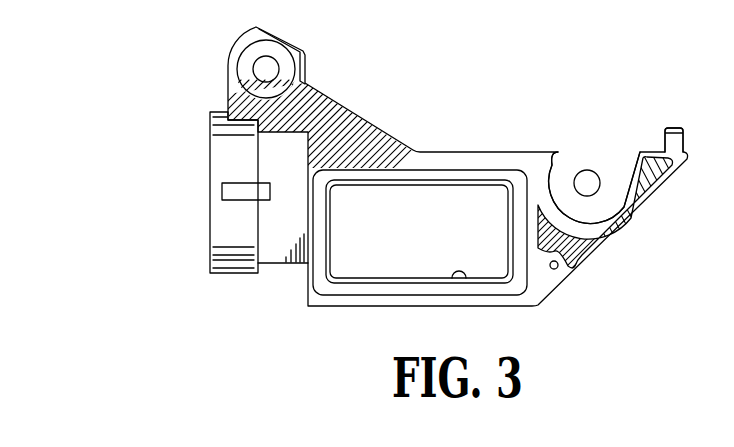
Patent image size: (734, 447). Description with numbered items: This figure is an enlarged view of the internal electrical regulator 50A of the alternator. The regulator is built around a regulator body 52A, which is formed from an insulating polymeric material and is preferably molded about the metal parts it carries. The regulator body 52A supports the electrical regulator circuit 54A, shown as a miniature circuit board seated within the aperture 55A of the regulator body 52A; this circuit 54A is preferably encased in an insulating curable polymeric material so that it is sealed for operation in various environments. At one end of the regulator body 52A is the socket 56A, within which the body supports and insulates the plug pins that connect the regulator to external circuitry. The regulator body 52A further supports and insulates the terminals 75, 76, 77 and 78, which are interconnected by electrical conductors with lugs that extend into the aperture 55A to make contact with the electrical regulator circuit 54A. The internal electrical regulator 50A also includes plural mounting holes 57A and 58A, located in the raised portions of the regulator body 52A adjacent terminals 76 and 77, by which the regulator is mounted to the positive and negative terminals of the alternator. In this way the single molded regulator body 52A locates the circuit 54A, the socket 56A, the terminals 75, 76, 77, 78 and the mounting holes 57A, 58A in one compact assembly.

The internal electrical regulator 50A is at (442, 107).
The regulator body 52A is at (575, 238).
The electrical regulator circuit 54A is at (370, 280).
The aperture 55A is at (450, 287).
The socket 56A is at (225, 260).
The mounting hole 57A is at (258, 65).
The mounting hole 58A is at (585, 187).
The terminal 75 is at (675, 132).
The terminal 76 is at (307, 55).
The terminal 77 is at (605, 163).
The terminal 78 is at (250, 87).